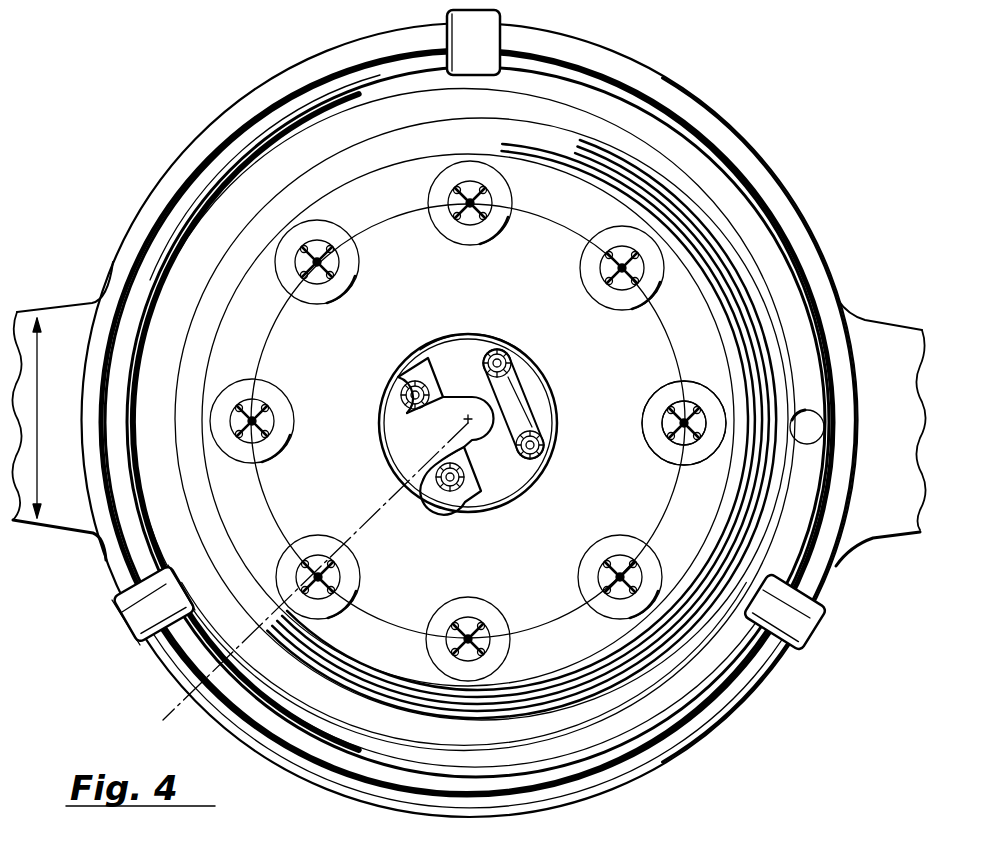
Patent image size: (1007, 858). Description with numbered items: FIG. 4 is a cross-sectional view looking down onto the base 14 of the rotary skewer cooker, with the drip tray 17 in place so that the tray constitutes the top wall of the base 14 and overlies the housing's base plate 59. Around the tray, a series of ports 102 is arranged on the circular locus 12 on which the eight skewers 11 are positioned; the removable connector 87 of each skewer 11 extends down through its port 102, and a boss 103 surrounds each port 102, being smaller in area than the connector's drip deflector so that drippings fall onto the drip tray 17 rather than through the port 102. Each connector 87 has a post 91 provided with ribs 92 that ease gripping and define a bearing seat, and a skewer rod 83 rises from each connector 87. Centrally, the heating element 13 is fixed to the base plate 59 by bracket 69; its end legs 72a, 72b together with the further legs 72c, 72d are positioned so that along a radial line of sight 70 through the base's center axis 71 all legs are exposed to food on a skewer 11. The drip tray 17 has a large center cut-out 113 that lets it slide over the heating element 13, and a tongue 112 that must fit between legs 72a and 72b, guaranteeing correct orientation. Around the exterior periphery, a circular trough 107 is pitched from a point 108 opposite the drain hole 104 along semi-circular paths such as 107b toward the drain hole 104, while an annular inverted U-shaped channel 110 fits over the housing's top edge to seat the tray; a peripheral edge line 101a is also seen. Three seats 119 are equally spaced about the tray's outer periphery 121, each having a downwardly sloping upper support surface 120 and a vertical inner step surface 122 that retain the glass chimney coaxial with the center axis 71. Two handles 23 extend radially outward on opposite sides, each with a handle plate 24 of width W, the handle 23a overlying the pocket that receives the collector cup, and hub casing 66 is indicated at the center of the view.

The skewer 11 is at (622, 284).
The circular locus 12 is at (389, 216).
The heating element 13 is at (478, 513).
The base 14 is at (738, 125).
The drip tray 17 is at (742, 271).
The handle 23 is at (56, 303).
The handle 23a is at (878, 312).
The handle plate 24 is at (65, 378).
The width W is at (23, 418).
The base plate 59 is at (464, 370).
The hub casing 66 is at (546, 409).
The bracket 69 is at (437, 346).
The radial line of sight 70 is at (168, 709).
The center axis 71 is at (462, 418).
The end leg 72a is at (447, 493).
The end leg 72b is at (407, 365).
The roller 72c is at (553, 452).
The roller 72d is at (492, 344).
The skewer rod 83 is at (668, 459).
The removable connector 87 is at (655, 441).
The post 91 is at (698, 406).
The ribs 92 is at (674, 405).
The ring edge 101a is at (352, 101).
The port 102 is at (272, 404).
The boss 103 is at (585, 264).
The drain hole 104 is at (818, 432).
The circular trough 107 is at (783, 303).
The semi-circular path 107b is at (553, 764).
The point 108 is at (140, 394).
The inverted U-shaped channel 110 is at (666, 746).
The tongue 112 is at (490, 452).
The center cut-out 113 is at (537, 386).
The seat 119 is at (480, 58).
The upper support surface 120 is at (503, 46).
The outer periphery 121 is at (140, 610).
The inner step surface 122 is at (185, 574).